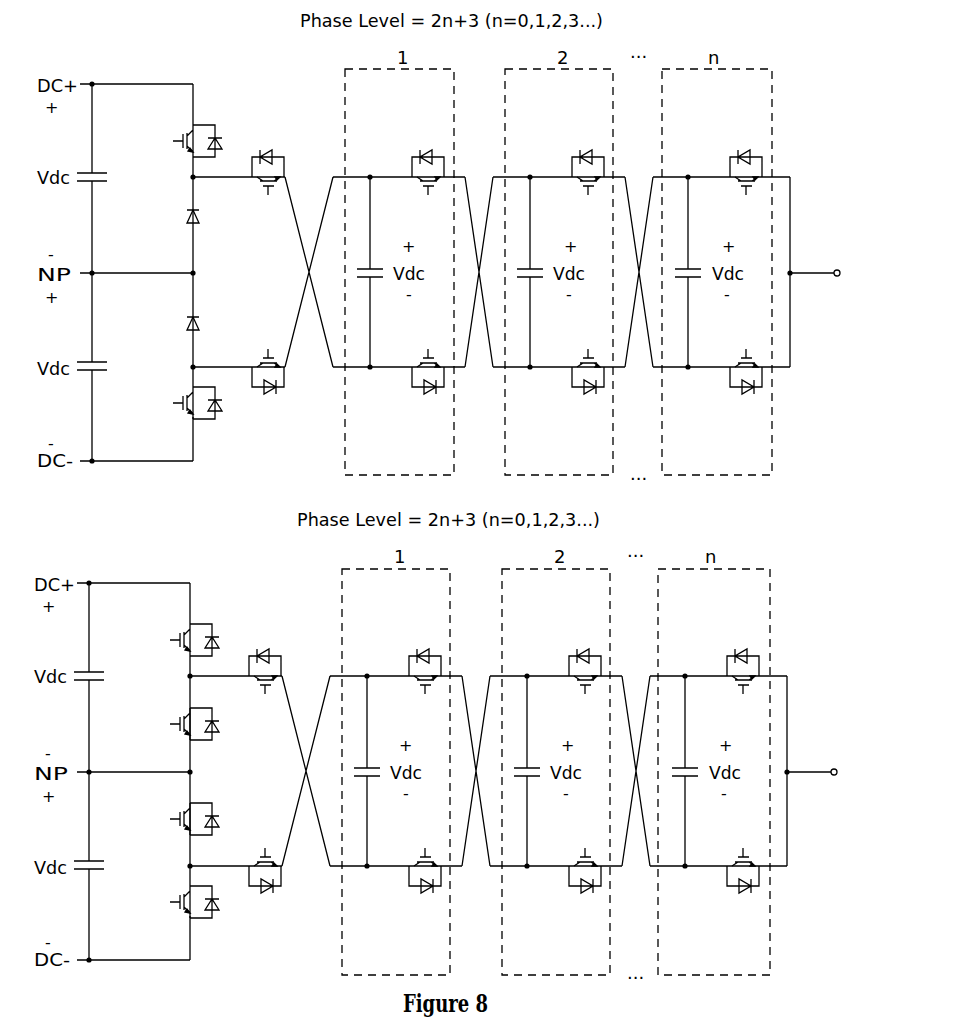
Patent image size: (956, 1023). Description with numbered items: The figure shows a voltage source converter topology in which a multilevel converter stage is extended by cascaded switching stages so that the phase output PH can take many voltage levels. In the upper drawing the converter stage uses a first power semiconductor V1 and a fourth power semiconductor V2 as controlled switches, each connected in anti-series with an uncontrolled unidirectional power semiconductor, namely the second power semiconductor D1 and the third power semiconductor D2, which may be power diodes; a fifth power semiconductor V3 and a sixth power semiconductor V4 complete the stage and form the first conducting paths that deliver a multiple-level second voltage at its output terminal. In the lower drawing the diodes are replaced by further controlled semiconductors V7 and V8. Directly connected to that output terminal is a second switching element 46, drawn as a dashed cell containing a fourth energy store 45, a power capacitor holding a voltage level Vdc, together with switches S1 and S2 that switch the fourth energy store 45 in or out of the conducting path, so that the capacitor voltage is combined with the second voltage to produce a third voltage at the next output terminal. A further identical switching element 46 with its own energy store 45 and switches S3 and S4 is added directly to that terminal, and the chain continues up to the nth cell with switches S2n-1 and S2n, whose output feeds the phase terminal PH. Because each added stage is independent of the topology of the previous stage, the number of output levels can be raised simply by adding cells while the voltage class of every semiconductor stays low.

The fourth energy store 45 is at (544, 521).
The second switching element 46 is at (557, 522).
The first power semiconductor V1 is at (180, 390).
The fourth power semiconductor V2 is at (180, 652).
The fifth power semiconductor V3 is at (266, 410).
The sixth power semiconductor V4 is at (266, 635).
The second power semiconductor D1 is at (174, 217).
The third power semiconductor D2 is at (174, 324).
The IGBT switch V7 is at (179, 724).
The IGBT switch V8 is at (179, 819).
The cell switch S1 is at (426, 409).
The cell switch S2 is at (426, 633).
The cell switch S3 is at (586, 409).
The cell switch S4 is at (586, 633).
The cell switch S2n-1 is at (740, 410).
The cell switch S2n is at (742, 632).
The phase output terminal PH is at (828, 521).